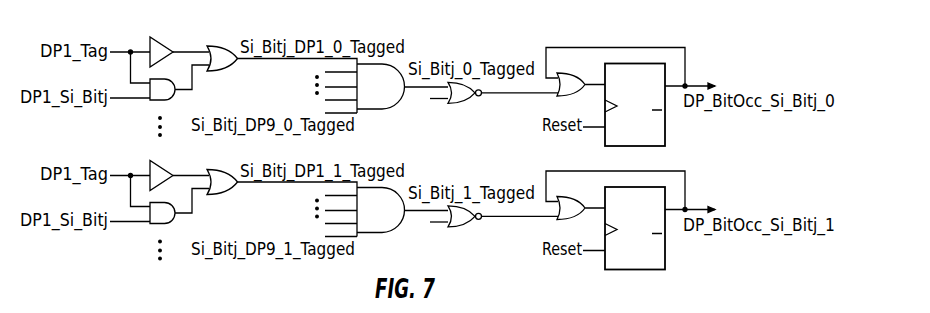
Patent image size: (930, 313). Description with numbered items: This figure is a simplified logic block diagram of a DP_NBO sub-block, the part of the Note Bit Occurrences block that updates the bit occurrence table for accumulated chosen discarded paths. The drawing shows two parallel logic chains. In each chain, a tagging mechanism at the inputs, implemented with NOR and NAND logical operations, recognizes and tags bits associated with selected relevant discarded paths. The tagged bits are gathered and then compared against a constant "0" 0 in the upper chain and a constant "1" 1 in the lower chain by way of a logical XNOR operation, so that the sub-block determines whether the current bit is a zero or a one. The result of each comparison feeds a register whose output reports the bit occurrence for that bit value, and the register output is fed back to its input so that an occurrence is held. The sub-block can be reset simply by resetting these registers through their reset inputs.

The logic zero constant input 0 is at (429, 97).
The logic one constant input 1 is at (429, 221).